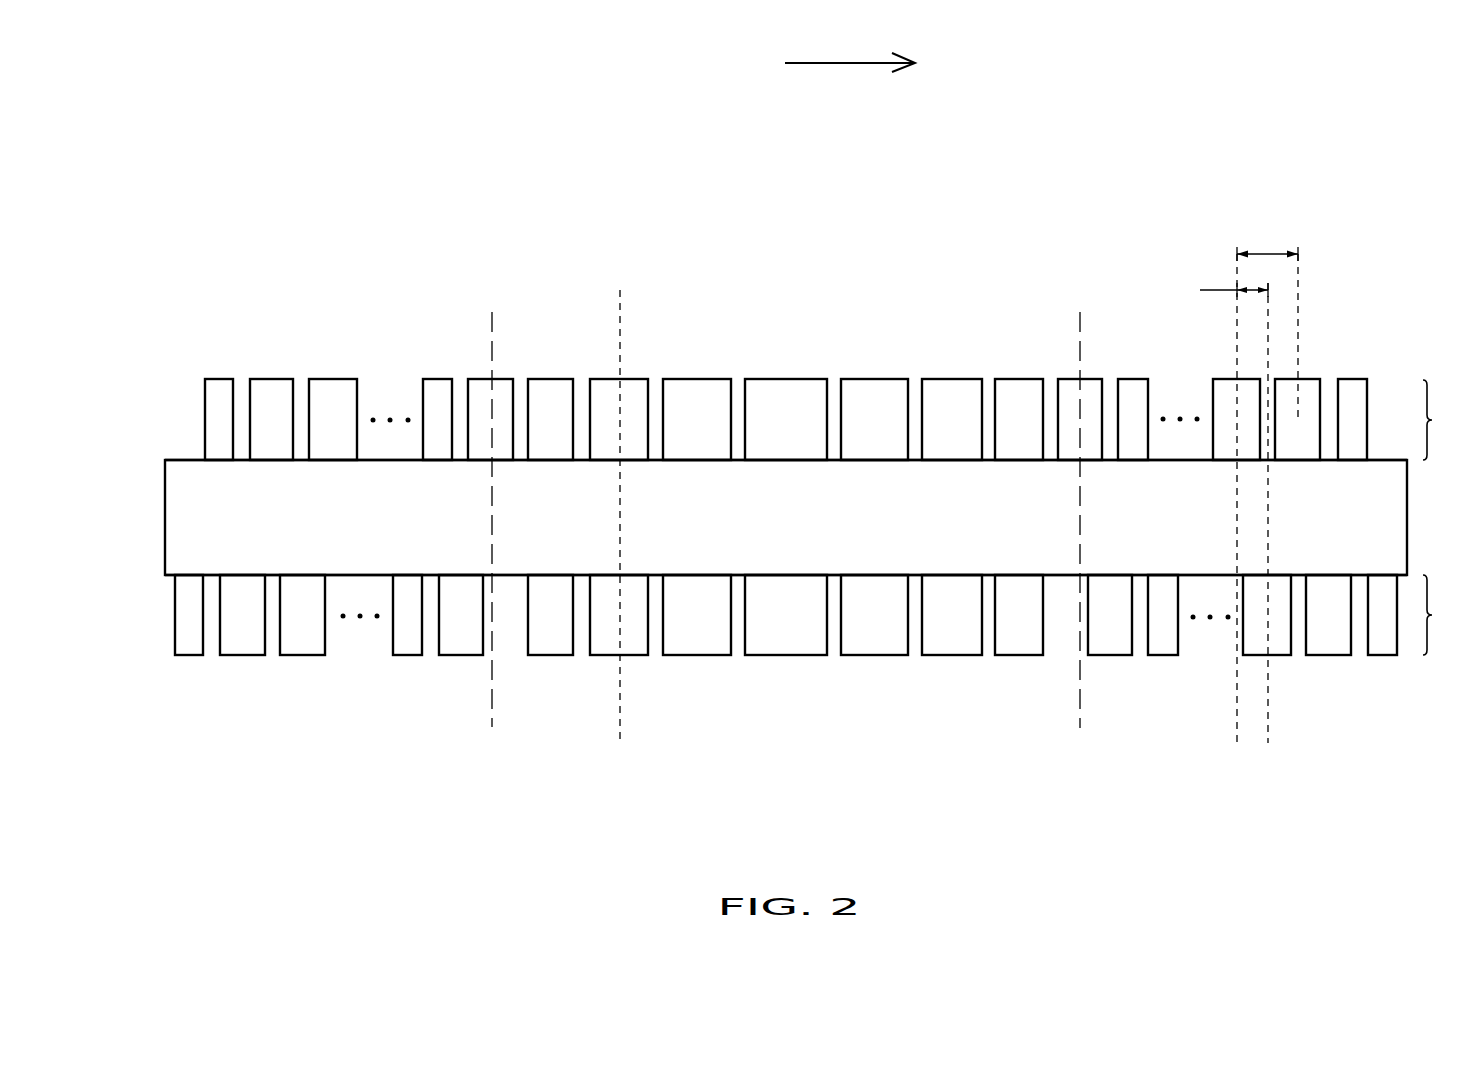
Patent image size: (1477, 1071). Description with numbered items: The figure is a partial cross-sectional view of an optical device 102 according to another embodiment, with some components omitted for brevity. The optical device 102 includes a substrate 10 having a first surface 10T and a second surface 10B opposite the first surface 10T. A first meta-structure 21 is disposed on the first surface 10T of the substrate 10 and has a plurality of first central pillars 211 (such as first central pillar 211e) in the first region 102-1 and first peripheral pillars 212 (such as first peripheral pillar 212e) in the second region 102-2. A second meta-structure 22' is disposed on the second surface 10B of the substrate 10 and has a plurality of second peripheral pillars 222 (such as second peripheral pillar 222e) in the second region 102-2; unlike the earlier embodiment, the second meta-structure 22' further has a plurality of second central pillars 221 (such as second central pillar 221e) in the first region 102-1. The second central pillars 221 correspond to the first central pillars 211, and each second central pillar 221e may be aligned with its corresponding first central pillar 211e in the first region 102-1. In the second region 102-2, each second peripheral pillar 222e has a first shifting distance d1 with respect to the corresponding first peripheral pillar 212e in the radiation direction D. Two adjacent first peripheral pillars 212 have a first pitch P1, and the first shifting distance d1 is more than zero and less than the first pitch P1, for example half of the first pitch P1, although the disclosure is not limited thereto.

The optical device 102 is at (147, 40).
The first region 102-1 is at (787, 210).
The second region 102-2 is at (334, 211).
The substrate 10 is at (177, 517).
The first surface 10T is at (397, 445).
The second surface 10B is at (350, 592).
The first meta-structure 21 is at (1443, 420).
The second meta-structure 22' is at (1446, 615).
The first central pillars 211 is at (875, 390).
The first central pillar 211e is at (603, 390).
The first peripheral pillars 212 is at (273, 390).
The first peripheral pillar 212e is at (1222, 385).
The second central pillars 221 is at (952, 645).
The second central pillar 221e is at (603, 645).
The second peripheral pillars 222 is at (462, 645).
The second peripheral pillar 222e is at (1280, 645).
The first pitch P1 is at (1267, 319).
The first shifting distance d1 is at (1234, 502).
The radiation direction D is at (850, 53).